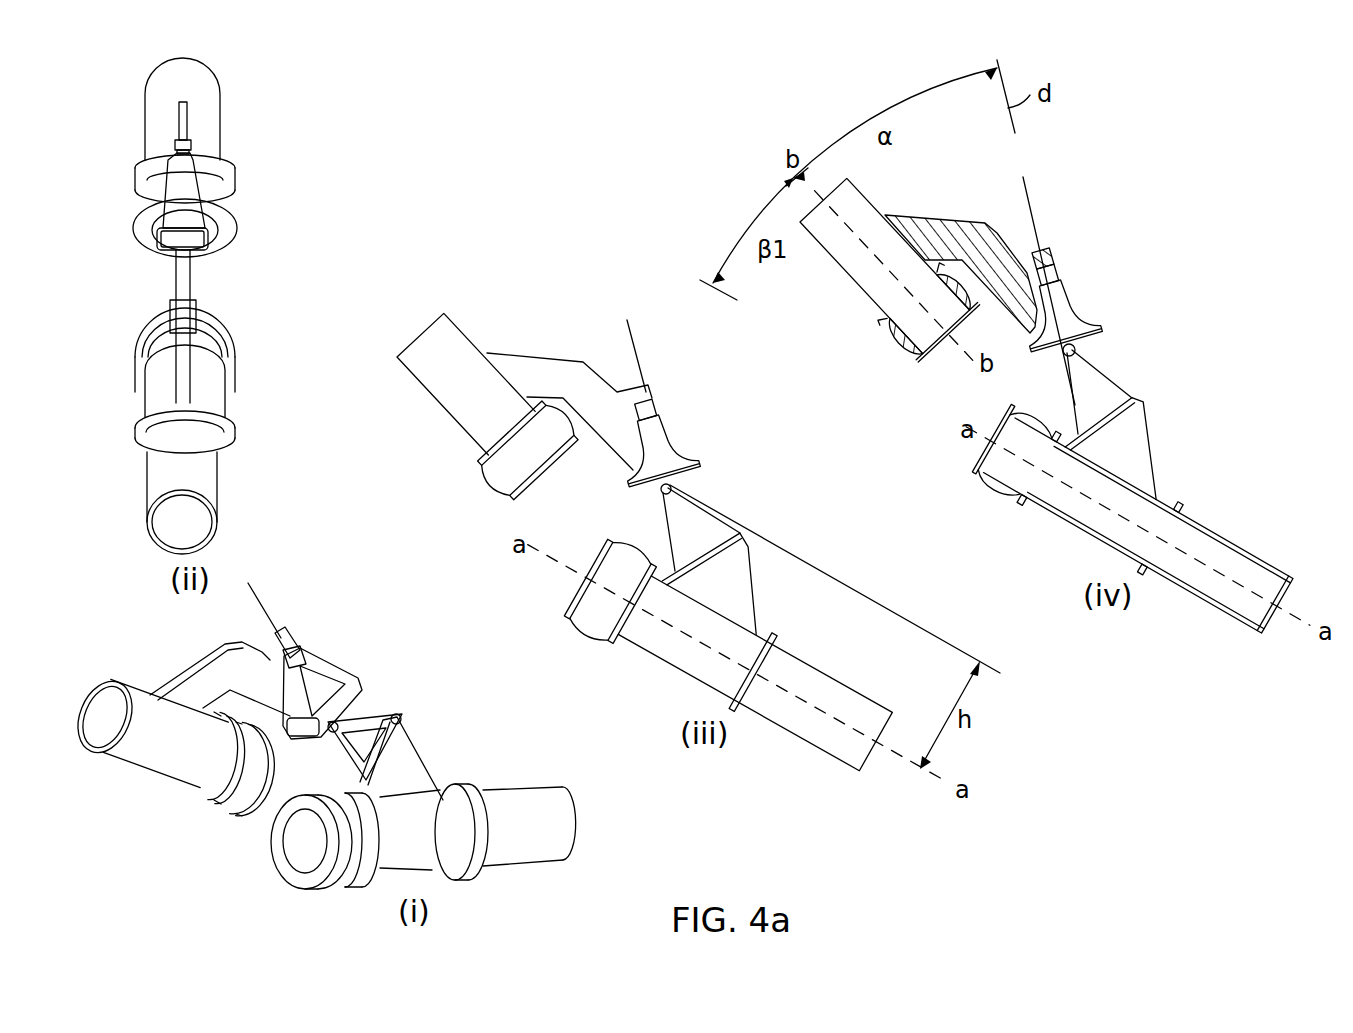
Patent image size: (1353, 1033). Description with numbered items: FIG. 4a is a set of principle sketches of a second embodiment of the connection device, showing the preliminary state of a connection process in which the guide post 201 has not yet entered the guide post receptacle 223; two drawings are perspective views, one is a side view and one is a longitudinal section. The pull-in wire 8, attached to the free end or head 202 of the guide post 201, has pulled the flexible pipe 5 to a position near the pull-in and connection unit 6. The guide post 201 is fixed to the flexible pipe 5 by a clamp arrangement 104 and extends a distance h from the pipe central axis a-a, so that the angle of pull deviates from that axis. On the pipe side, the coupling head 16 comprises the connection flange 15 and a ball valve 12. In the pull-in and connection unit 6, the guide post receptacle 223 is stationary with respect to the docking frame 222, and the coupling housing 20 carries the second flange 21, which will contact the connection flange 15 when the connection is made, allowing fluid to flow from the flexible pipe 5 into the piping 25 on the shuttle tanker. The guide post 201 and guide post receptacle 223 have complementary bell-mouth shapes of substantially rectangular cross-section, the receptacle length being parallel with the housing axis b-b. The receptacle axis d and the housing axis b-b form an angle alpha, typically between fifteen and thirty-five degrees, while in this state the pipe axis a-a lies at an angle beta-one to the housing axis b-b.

The flexible pipe 5 is at (192, 476).
The pull-in and connection unit 6 is at (937, 192).
The pull-in wire 8 is at (270, 612).
The ball valve 12 is at (637, 594).
The connection flange 15 is at (286, 885).
The coupling head 16 is at (1198, 446).
The coupling housing 20 is at (235, 190).
The second flange 21 is at (232, 252).
The piping 25 is at (222, 96).
The clamp arrangement 104 is at (428, 801).
The guide post 201 is at (365, 717).
The head 202 is at (1076, 357).
The docking frame 222 is at (205, 669).
The guide post receptacle 223 is at (333, 660).